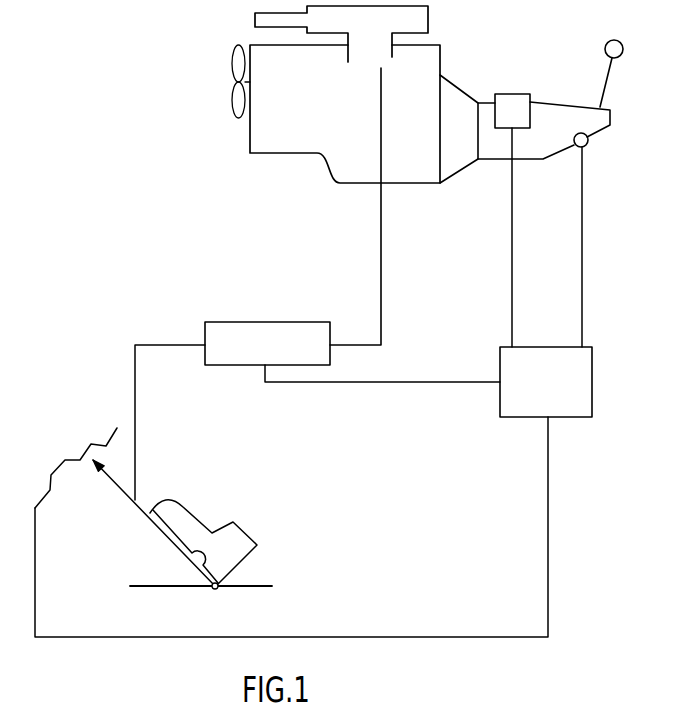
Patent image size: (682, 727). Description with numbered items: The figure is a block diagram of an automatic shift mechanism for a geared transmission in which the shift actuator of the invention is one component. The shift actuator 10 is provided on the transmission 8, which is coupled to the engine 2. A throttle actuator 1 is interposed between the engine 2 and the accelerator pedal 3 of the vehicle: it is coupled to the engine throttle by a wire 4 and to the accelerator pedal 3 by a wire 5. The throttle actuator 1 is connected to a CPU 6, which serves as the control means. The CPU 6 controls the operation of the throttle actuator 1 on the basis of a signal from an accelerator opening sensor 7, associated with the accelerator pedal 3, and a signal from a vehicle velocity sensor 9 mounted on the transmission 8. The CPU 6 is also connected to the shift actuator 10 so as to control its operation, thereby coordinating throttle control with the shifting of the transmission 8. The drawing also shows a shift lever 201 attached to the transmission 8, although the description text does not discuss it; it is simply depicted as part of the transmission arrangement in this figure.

The throttle actuator 1 is at (258, 320).
The engine 2 is at (277, 148).
The accelerator pedal 3 is at (150, 520).
The wire 4 is at (381, 222).
The wire 5 is at (135, 368).
The CPU 6 is at (592, 382).
The accelerator opening sensor 7 is at (77, 452).
The transmission 8 is at (554, 100).
The vehicle velocity sensor 9 is at (586, 146).
The shift actuator 10 is at (511, 94).
The shift lever 201 is at (613, 40).